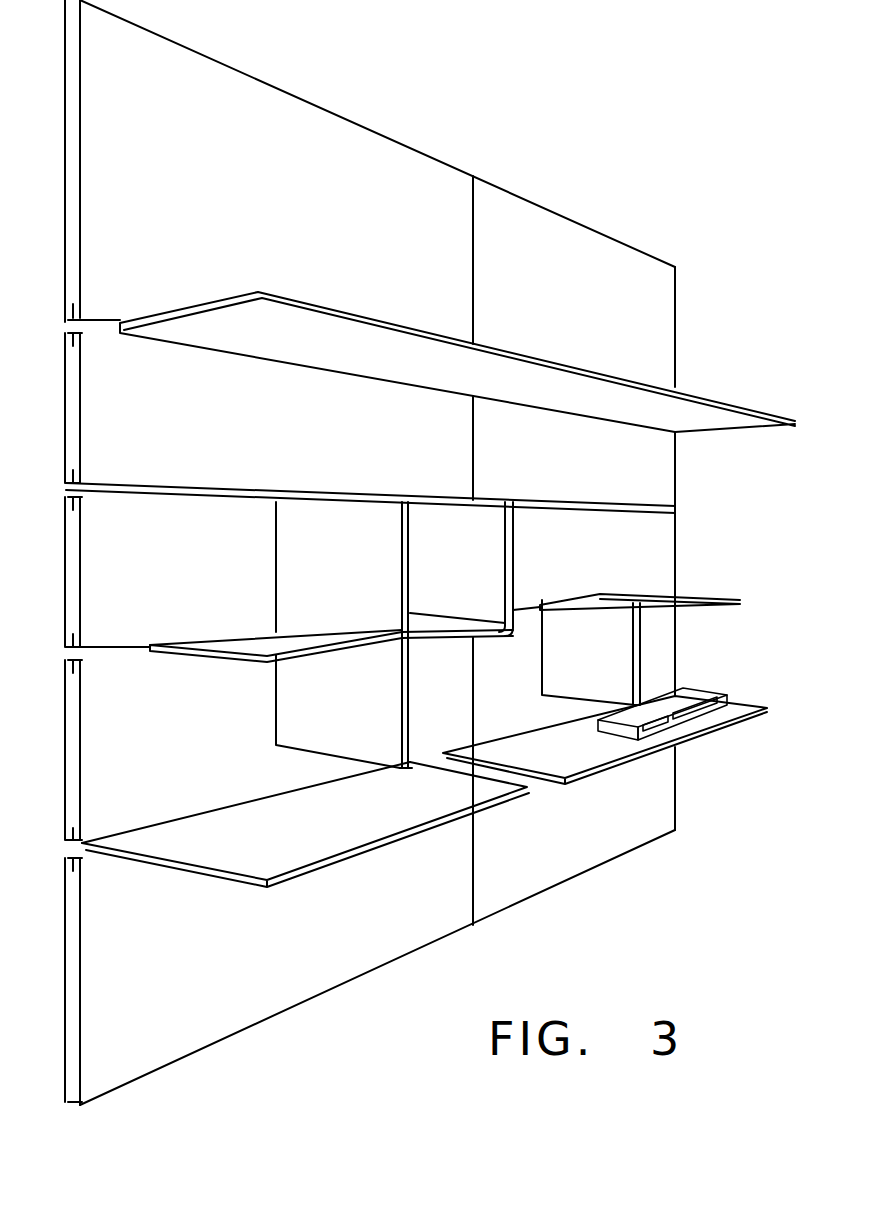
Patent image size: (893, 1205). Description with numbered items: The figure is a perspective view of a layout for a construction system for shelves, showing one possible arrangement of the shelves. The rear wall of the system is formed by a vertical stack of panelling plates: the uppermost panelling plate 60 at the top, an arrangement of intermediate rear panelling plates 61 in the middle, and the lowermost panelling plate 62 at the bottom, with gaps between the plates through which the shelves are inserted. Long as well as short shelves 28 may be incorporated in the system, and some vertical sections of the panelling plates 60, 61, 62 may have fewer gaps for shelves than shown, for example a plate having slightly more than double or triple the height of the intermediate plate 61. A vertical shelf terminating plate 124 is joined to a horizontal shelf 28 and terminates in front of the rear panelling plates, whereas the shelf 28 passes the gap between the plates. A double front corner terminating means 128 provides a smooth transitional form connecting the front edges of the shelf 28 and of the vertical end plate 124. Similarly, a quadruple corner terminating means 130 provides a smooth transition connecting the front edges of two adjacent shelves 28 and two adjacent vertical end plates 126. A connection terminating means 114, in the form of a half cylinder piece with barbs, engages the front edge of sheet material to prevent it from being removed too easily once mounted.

The uppermost panelling plate 60 is at (293, 110).
The intermediate rear panelling plate 61 is at (86, 374).
The lowermost panelling plate 62 is at (595, 855).
The shelf 28 is at (707, 398).
The quadruple corner terminating means 130 is at (400, 633).
The vertical end plate 126 is at (357, 690).
The vertical shelf terminating plate 124 is at (512, 552).
The double front corner terminating means 128 is at (607, 632).
The connection terminating means 114 is at (405, 831).